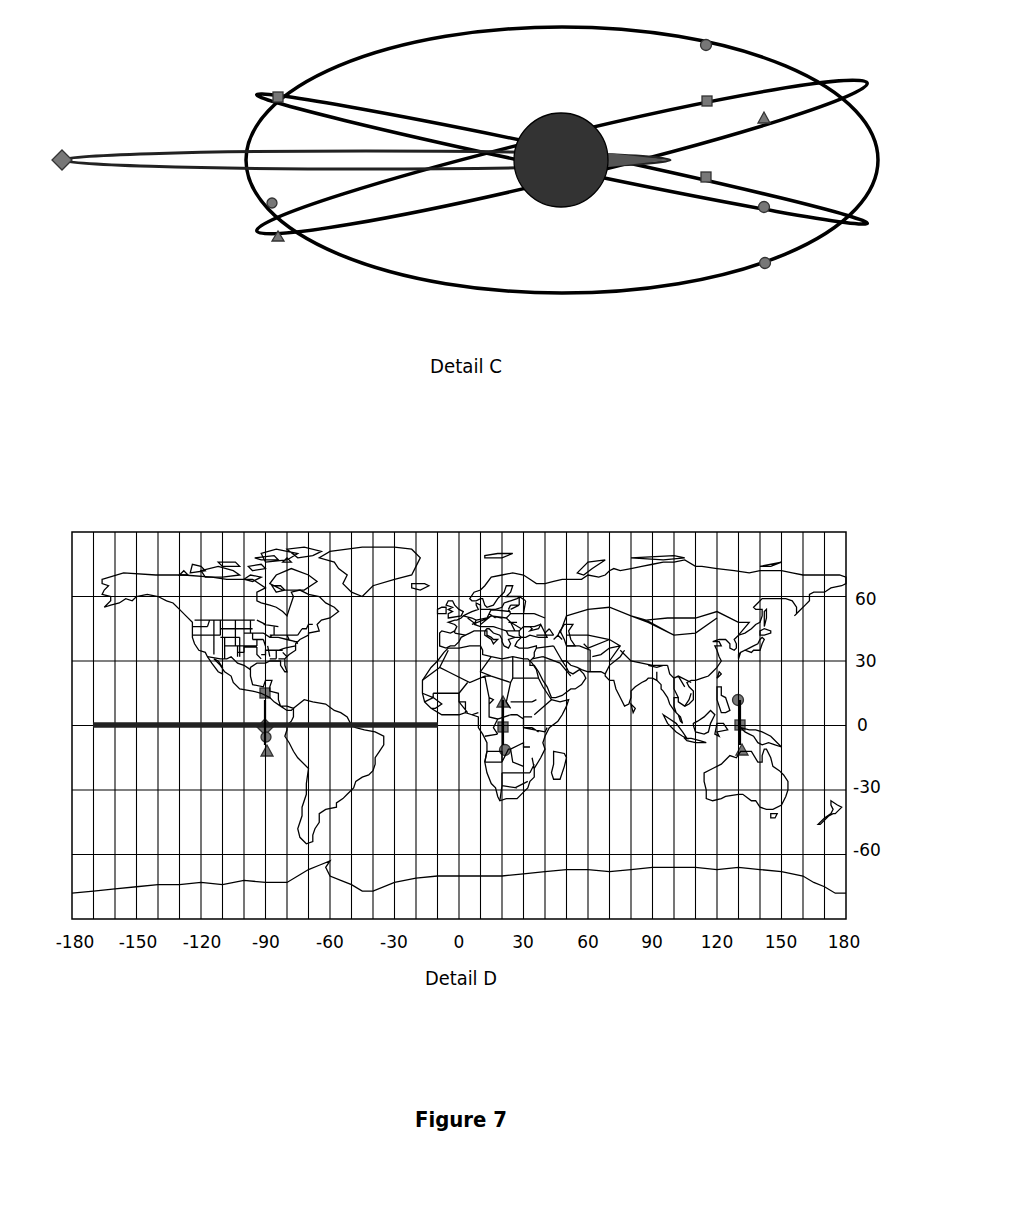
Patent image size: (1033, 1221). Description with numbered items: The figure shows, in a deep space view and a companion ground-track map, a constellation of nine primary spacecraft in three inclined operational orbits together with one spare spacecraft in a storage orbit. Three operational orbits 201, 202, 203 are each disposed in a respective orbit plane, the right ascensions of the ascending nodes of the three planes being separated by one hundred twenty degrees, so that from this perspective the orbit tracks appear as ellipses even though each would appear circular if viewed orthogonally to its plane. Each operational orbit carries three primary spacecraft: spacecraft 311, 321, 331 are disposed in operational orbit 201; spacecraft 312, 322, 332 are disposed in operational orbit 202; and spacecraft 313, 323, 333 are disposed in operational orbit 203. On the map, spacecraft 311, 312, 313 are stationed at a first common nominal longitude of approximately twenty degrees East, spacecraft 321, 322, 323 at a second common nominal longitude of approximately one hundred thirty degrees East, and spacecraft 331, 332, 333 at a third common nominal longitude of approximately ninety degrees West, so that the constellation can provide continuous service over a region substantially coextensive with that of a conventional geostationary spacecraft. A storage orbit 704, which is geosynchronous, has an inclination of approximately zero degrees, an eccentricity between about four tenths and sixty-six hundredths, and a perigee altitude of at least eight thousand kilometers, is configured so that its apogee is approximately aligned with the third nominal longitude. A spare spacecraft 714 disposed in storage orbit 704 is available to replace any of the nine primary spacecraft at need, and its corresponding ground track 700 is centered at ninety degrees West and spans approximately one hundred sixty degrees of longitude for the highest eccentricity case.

The operational orbit 201 is at (830, 82).
The operational orbit 202 is at (653, 290).
The operational orbit 203 is at (322, 99).
The primary spacecraft 311 is at (767, 125).
The primary spacecraft 312 is at (767, 270).
The primary spacecraft 313 is at (762, 212).
The primary spacecraft 321 is at (703, 97).
The primary spacecraft 322 is at (703, 41).
The primary spacecraft 323 is at (712, 175).
The primary spacecraft 331 is at (278, 243).
The primary spacecraft 332 is at (268, 203).
The primary spacecraft 333 is at (278, 93).
The ground track 700 is at (143, 723).
The storage orbit 704 is at (147, 151).
The spare spacecraft 714 is at (63, 170).